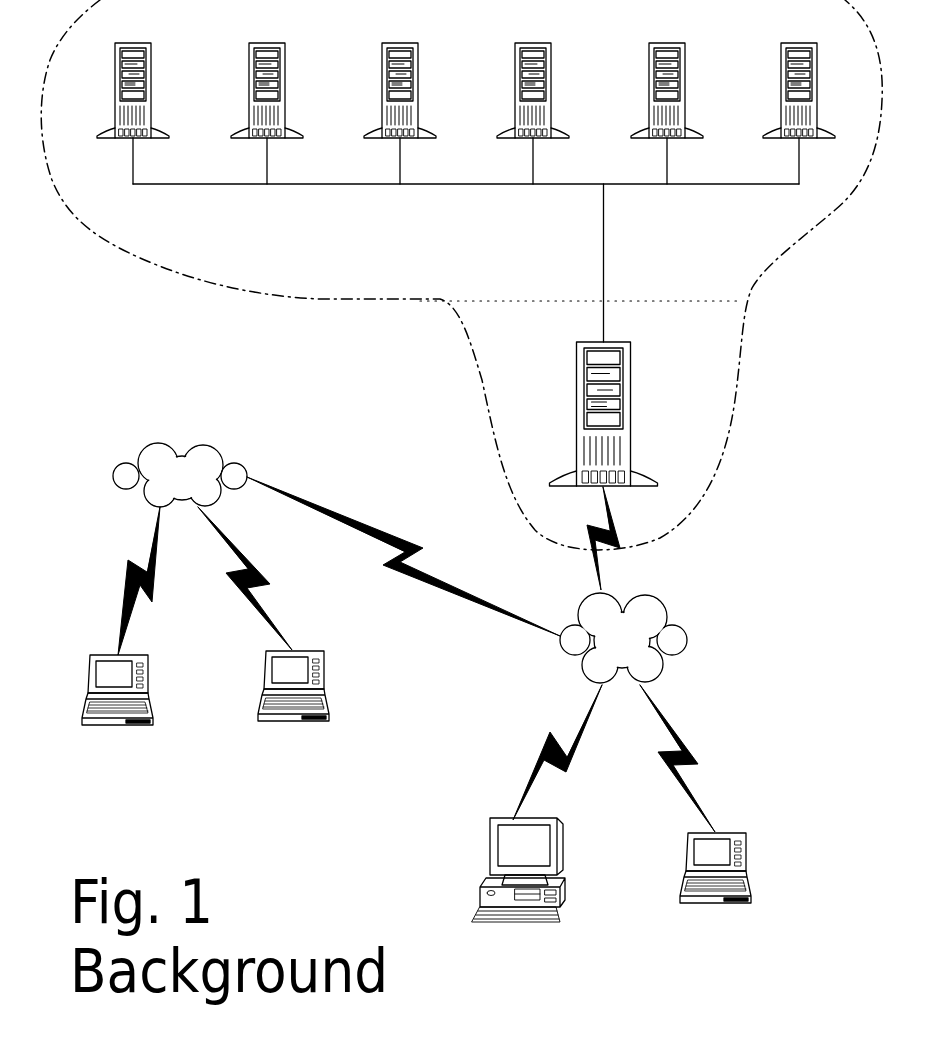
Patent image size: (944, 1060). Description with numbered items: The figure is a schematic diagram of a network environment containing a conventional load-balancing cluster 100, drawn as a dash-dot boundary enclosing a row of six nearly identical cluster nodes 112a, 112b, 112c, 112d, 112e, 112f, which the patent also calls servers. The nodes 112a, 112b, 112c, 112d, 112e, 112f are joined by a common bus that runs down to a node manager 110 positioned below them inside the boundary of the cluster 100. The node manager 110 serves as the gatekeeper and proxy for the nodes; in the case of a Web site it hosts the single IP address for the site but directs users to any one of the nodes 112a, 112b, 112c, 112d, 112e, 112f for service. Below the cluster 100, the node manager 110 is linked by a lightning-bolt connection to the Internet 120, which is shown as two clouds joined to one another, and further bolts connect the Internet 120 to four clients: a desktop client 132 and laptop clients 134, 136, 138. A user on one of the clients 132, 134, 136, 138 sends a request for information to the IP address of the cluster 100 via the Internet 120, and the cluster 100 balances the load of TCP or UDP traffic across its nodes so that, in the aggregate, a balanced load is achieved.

The load-balancing cluster 100 is at (212, 306).
The node manager 110 is at (631, 414).
The cluster node 112a is at (135, 42).
The cluster node 112b is at (269, 42).
The cluster node 112c is at (402, 42).
The cluster node 112d is at (535, 42).
The cluster node 112e is at (669, 42).
The cluster node 112f is at (798, 42).
The Internet 120 is at (208, 443).
The client 132 is at (557, 852).
The client 134 is at (745, 866).
The client 136 is at (148, 690).
The client 138 is at (326, 686).